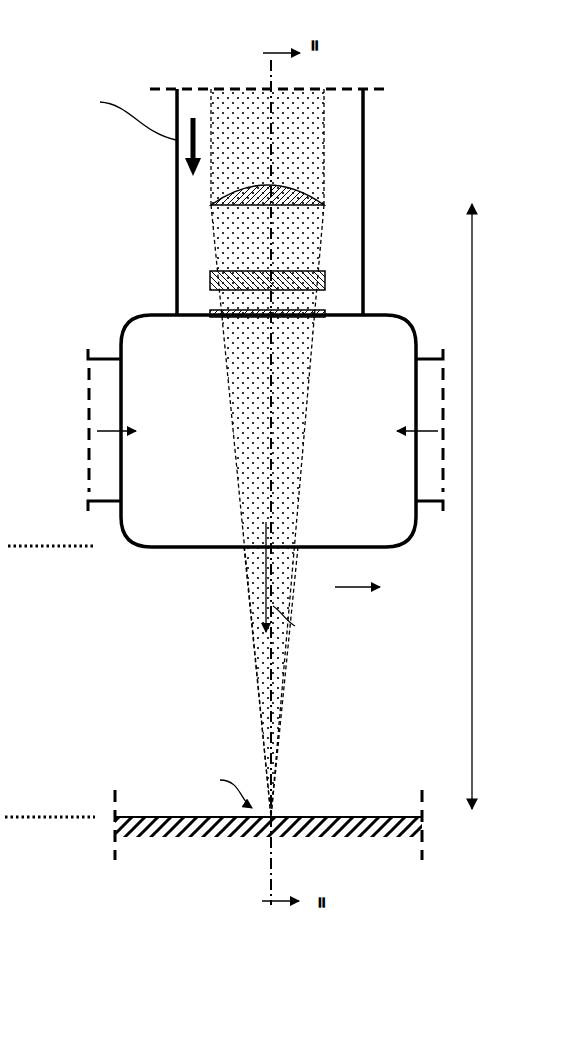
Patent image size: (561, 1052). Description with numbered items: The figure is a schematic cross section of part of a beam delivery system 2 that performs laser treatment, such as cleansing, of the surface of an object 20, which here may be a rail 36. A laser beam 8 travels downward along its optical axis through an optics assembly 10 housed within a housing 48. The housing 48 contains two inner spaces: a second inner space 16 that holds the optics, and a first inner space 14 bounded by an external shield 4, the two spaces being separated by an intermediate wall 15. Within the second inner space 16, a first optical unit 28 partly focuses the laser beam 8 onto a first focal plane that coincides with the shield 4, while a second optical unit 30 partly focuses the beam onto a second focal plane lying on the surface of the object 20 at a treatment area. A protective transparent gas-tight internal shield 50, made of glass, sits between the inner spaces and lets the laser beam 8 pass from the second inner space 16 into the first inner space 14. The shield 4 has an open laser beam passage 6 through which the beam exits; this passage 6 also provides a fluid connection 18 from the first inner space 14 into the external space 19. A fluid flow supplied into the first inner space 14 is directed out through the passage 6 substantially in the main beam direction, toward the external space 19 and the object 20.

The beam delivery system 2 is at (58, 193).
The optics assembly 10 is at (148, 234).
The second inner space 16 is at (357, 158).
The housing 48 is at (381, 140).
The laser beam 8 is at (312, 145).
The second optical unit 30 is at (335, 203).
The first optical unit 28 is at (335, 282).
The protective transparent gas-tight internal shield 50 is at (218, 320).
The intermediate wall 15 is at (176, 313).
The shield 4 is at (165, 548).
The first inner space 14 is at (200, 513).
The laser beam passage 6 is at (253, 568).
The fluid connection 18 is at (284, 682).
The external space 19 is at (197, 688).
The rail 36 is at (140, 803).
The object 20 is at (186, 837).